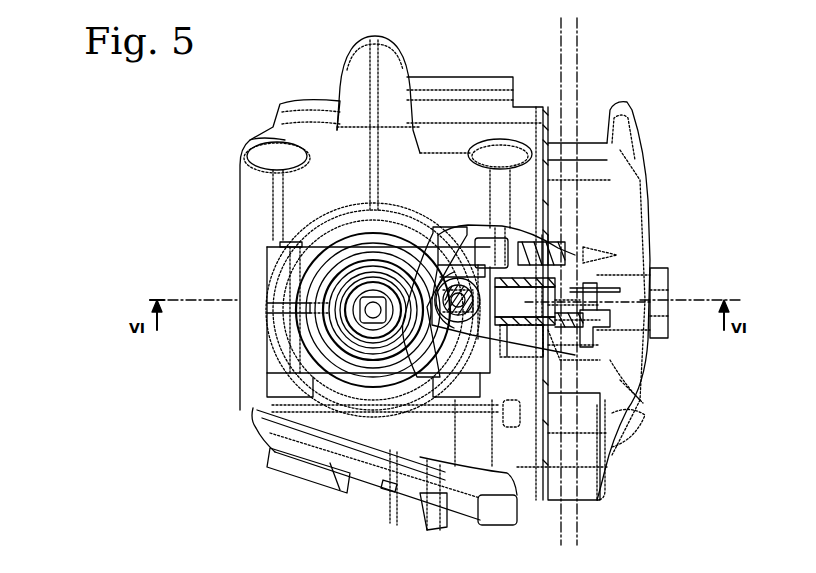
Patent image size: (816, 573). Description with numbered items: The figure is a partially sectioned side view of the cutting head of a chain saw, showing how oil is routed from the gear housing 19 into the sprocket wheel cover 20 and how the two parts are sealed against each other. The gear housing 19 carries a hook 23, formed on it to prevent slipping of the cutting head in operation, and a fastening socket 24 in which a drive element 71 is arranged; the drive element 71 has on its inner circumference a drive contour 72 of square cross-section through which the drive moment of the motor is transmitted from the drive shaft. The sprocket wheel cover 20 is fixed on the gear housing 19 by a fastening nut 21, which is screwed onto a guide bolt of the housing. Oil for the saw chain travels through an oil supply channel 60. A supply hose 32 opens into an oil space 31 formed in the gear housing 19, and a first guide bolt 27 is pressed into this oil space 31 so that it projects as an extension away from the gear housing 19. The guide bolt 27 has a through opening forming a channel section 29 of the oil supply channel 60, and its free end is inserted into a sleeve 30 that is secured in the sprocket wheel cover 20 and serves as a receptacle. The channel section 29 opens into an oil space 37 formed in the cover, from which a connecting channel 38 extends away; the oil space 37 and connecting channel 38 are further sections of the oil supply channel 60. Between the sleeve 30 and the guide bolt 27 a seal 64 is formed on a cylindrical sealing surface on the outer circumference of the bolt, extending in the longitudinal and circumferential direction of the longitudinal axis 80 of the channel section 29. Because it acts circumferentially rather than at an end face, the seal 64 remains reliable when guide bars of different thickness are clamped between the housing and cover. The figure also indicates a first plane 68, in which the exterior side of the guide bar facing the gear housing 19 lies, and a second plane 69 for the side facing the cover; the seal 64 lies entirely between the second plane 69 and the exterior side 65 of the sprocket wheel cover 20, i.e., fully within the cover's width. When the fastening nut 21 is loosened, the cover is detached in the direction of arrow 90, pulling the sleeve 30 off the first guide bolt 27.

The gear housing 19 is at (243, 205).
The sprocket wheel cover 20 is at (618, 163).
The fastening nut 21 is at (658, 325).
The hook 23 is at (360, 80).
The fastening socket 24 is at (318, 287).
The first guide bolt 27 is at (527, 322).
The channel section 29 is at (553, 295).
The sleeve 30 is at (597, 285).
The oil space 31 is at (485, 318).
The supply hose 32 is at (462, 318).
The oil space 37 is at (622, 294).
The connecting channel 38 is at (637, 357).
The oil supply channel 60 is at (513, 300).
The seal 64 is at (573, 273).
The exterior side 65 is at (655, 238).
The first plane 68 is at (560, 48).
The second plane 69 is at (577, 50).
The drive element 71 is at (350, 312).
The drive contour 72 is at (363, 316).
The longitudinal axis 80 is at (592, 300).
The arrow 90 is at (707, 108).